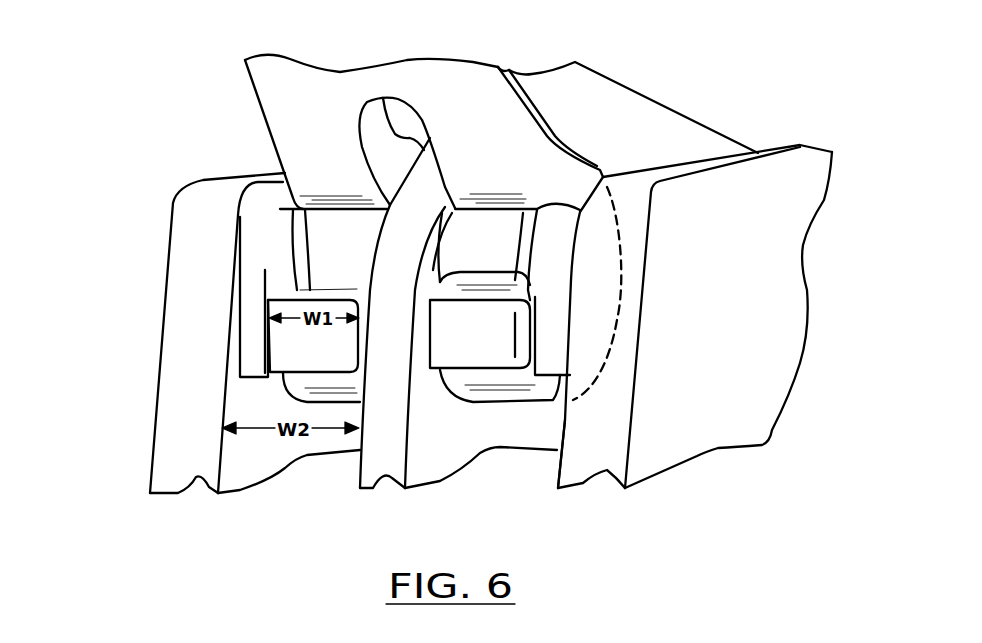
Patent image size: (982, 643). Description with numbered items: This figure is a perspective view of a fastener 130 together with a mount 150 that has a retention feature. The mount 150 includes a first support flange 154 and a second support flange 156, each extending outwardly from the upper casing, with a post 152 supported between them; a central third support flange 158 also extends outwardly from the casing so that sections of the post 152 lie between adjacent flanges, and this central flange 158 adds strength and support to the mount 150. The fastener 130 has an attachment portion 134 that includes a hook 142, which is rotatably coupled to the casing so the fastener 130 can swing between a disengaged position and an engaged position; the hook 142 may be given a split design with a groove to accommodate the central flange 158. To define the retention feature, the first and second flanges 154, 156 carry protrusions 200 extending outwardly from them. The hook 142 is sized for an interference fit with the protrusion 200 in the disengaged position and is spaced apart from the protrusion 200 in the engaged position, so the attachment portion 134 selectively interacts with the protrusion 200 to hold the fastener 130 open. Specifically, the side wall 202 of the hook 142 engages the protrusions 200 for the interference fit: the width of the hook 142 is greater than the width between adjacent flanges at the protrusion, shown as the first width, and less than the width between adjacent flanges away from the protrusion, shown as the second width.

The fastener 130 is at (465, 107).
The post 152 is at (477, 243).
The third support flange 158 is at (387, 442).
The second support flange 156 is at (193, 283).
The mount 150 is at (716, 262).
The first support flange 154 is at (600, 408).
The protrusion 200 is at (252, 315).
The side wall 202 is at (277, 343).
The attachment portion 134 is at (294, 419).
The hook 142 is at (303, 357).